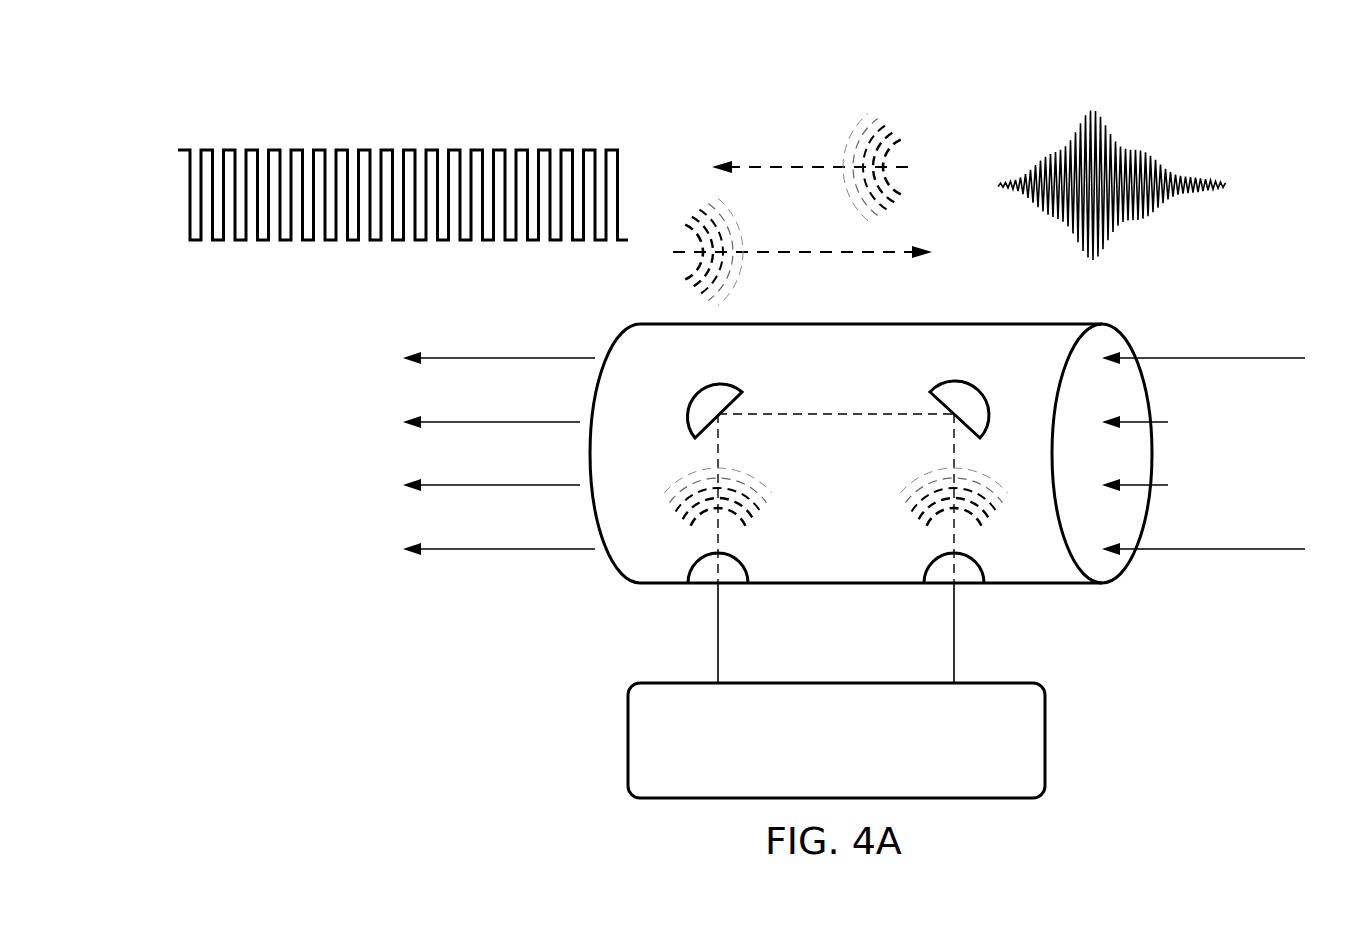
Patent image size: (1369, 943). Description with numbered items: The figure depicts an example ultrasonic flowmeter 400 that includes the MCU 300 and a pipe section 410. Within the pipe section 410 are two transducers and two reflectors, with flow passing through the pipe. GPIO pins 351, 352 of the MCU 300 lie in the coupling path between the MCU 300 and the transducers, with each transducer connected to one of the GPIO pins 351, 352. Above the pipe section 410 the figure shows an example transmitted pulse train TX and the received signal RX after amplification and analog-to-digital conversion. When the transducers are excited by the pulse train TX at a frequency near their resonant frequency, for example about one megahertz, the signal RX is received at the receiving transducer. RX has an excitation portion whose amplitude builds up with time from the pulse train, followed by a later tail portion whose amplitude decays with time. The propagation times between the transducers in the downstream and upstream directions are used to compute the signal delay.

The ultrasonic flowmeter 400 is at (648, 67).
The pipe section 410 is at (980, 312).
The MCU 300 is at (860, 755).
The GPIO pin 351 is at (713, 680).
The GPIO pin 352 is at (960, 680).